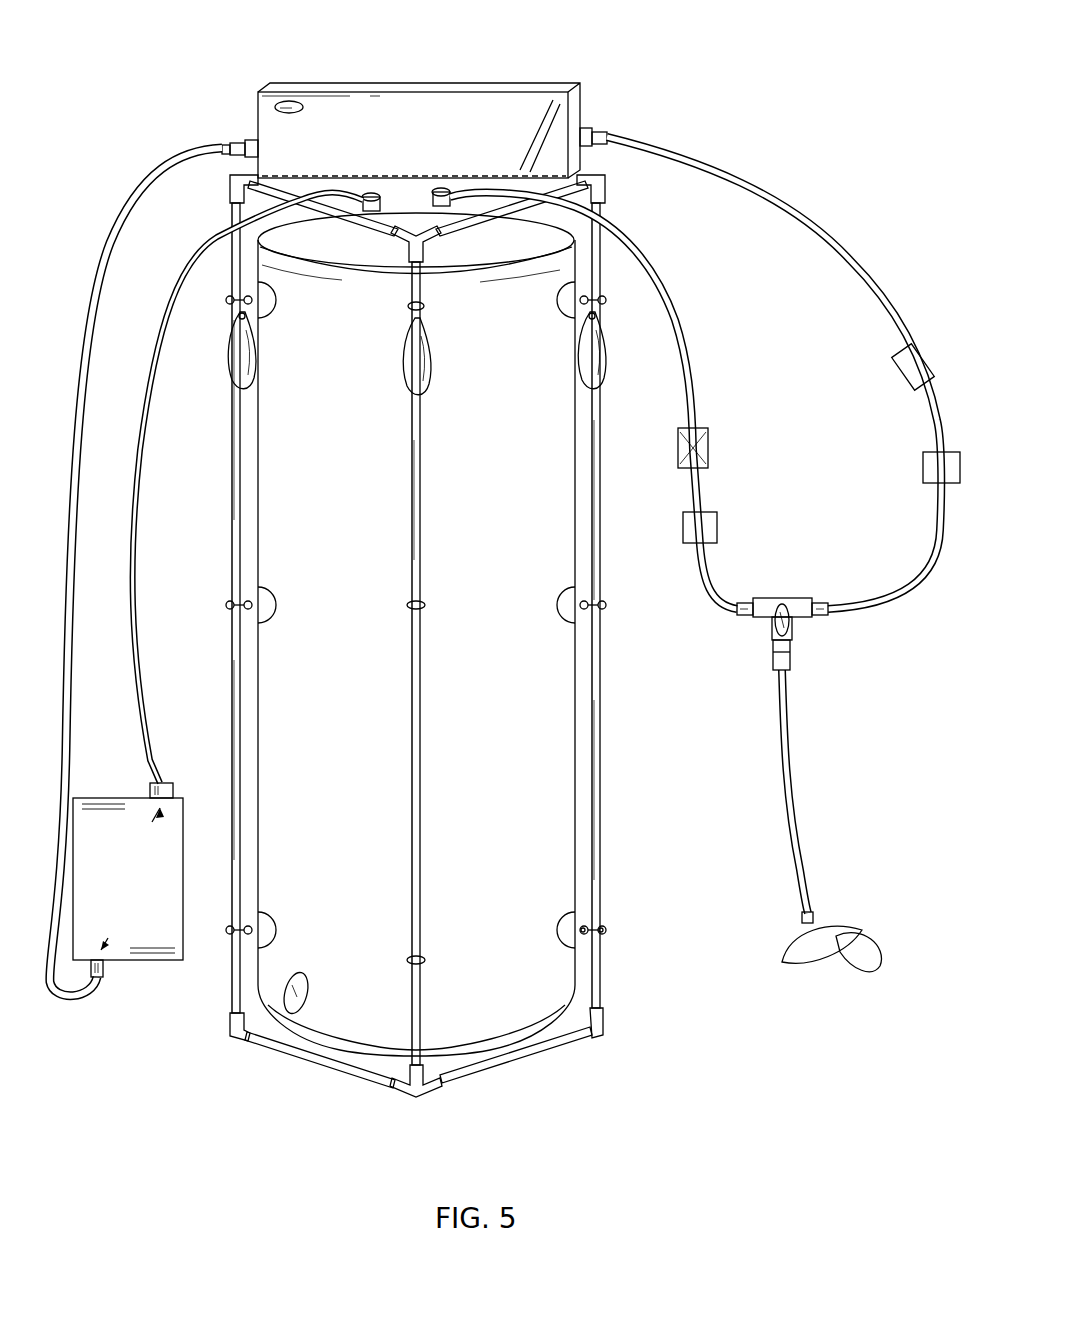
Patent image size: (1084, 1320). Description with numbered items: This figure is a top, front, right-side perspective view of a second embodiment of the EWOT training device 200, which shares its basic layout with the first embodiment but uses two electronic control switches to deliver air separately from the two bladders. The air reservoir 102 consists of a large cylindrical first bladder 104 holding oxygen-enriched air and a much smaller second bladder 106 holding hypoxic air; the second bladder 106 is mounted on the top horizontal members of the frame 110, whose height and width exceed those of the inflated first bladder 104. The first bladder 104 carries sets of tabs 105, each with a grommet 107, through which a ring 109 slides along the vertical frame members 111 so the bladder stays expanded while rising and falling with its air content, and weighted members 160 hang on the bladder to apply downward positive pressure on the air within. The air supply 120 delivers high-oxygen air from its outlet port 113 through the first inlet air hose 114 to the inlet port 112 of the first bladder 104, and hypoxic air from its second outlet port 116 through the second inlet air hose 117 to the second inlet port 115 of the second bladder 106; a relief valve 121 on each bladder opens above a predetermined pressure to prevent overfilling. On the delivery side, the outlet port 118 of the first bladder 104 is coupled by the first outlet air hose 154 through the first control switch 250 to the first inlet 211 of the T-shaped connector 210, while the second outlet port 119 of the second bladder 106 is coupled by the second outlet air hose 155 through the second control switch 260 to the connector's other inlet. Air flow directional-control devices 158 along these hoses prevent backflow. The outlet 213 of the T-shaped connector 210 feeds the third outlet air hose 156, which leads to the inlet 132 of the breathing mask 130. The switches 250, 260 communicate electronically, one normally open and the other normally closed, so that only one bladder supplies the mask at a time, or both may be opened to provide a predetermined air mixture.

The air reservoir 102 is at (183, 128).
The first bladder 104 is at (524, 772).
The tab 105 is at (590, 918).
The second bladder 106 is at (420, 110).
The grommet 107 is at (598, 926).
The ring 109 is at (606, 932).
The frame 110 is at (618, 1050).
The frame member 111 is at (232, 672).
The inlet port 112 is at (365, 210).
The outlet port 113 is at (150, 785).
The first inlet air hose 114 is at (140, 508).
The second inlet port 115 is at (240, 170).
The second outlet port 116 is at (104, 978).
The second inlet air hose 117 is at (115, 240).
The outlet port 118 is at (445, 208).
The second outlet port 119 is at (590, 128).
The air supply 120 is at (145, 965).
The relief valve 121 is at (280, 100).
The breathing mask 130 is at (845, 930).
The inlet 132 is at (812, 912).
The first outlet air hose 154 is at (678, 320).
The second outlet air hose 155 is at (845, 260).
The third outlet air hose 156 is at (790, 790).
The air flow directional-control device 158 is at (705, 440).
The weighted member 160 is at (228, 370).
The EWOT training device 200 is at (822, 1055).
The T-shaped connector 210 is at (775, 598).
The first inlet 211 is at (745, 616).
The outlet 213 is at (792, 660).
The first control switch 250 is at (718, 525).
The second control switch 260 is at (923, 470).